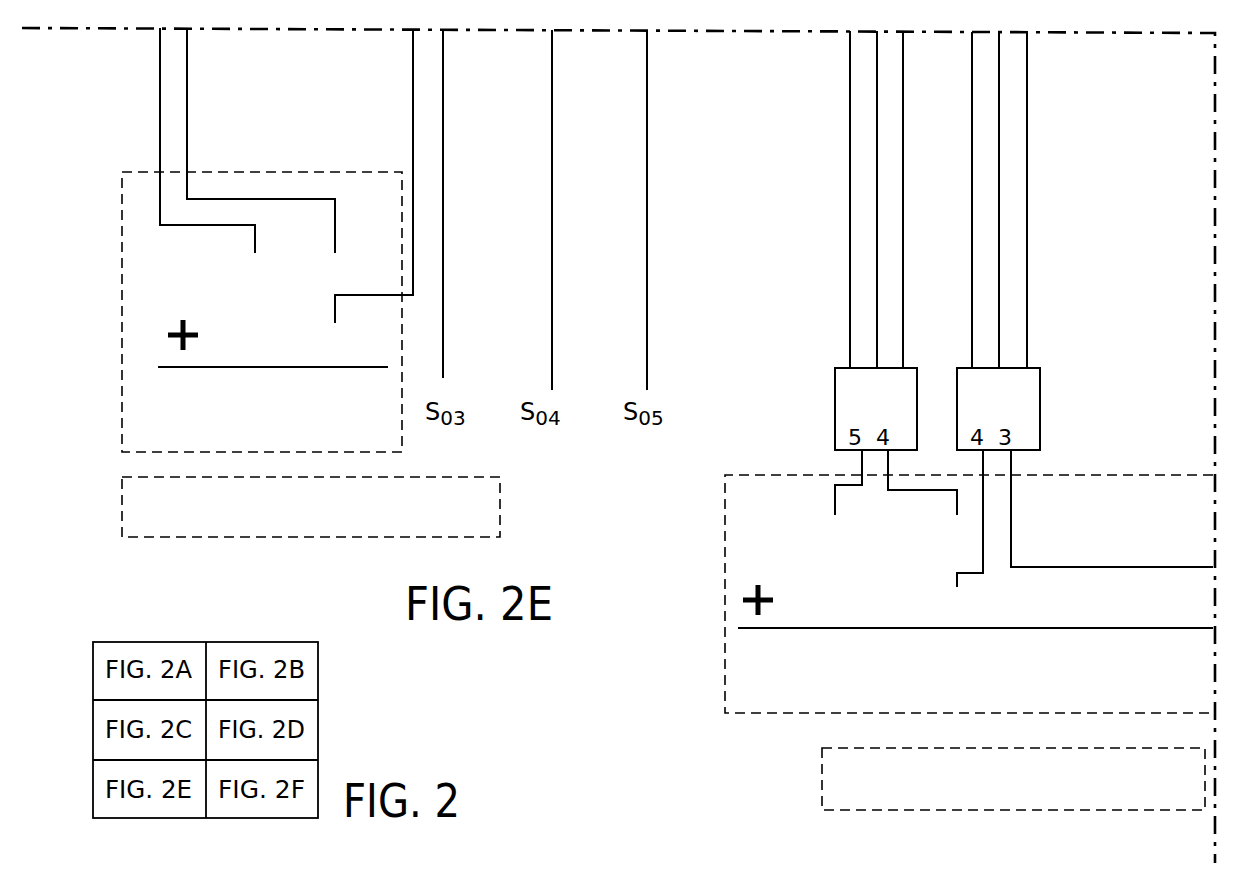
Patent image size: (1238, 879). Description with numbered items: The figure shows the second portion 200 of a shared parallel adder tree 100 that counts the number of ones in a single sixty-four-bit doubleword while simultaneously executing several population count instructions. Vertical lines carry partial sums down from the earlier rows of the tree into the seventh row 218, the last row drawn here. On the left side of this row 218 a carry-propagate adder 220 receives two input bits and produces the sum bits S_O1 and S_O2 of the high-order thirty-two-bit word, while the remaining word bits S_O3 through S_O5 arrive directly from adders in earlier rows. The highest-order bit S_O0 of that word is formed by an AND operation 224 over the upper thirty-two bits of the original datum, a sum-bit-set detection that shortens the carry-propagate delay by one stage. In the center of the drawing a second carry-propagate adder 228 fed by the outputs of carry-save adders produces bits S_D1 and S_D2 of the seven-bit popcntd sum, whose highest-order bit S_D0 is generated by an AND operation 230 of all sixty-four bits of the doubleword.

The shared parallel adder tree 100 is at (673, 523).
The second portion of the shared parallel adder tree 200 is at (652, 595).
The Row 7 218 is at (63, 390).
The carry-propagate adder 220 is at (122, 245).
The AND operation 224 is at (165, 537).
The adder cell with inputs AD1, AD2, BD2 228 is at (725, 677).
The AND operation 230 is at (872, 810).